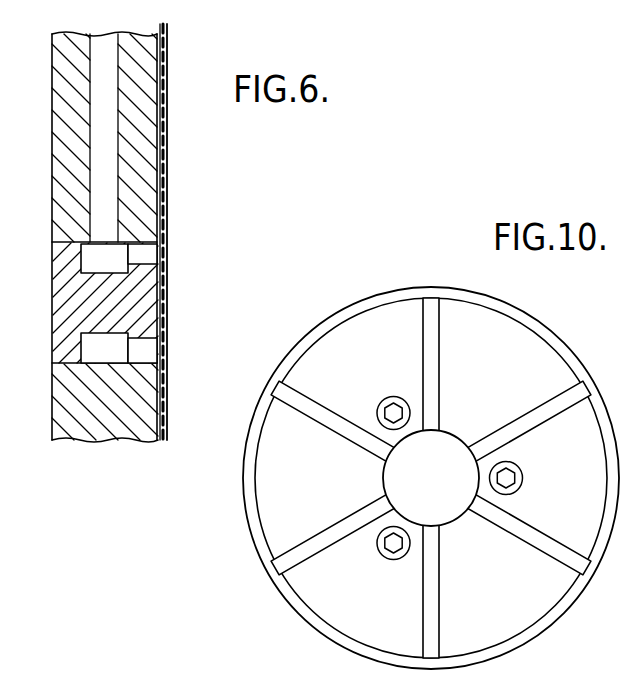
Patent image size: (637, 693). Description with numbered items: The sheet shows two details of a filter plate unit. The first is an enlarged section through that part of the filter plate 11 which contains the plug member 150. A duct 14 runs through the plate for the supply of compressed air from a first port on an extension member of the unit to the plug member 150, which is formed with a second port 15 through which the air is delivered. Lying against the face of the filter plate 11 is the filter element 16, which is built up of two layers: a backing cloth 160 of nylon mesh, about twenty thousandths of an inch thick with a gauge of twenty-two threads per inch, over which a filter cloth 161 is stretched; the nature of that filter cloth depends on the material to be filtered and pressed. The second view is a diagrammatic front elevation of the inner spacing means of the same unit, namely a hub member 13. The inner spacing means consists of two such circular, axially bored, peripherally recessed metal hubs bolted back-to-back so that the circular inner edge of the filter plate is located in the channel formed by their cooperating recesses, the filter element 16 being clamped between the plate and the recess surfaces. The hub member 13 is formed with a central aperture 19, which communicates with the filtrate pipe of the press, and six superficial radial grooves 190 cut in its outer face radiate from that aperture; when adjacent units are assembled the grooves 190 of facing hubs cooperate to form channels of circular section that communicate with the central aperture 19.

In FIG. 6, the filter plate 11 is at (62, 388).
In FIG. 6, the duct 14 is at (110, 128).
In FIG. 6, the second port 15 is at (147, 251).
In FIG. 6, the filter element 16 is at (174, 177).
In FIG. 6, the plug member 150 is at (63, 284).
In FIG. 6, the backing cloth 160 is at (157, 290).
In FIG. 6, the filter cloth 161 is at (168, 310).
In FIG. 10, the hub member 13 is at (579, 649).
In FIG. 10, the central aperture 19 is at (403, 477).
In FIG. 10, the superficial radial groove 190 is at (298, 560).